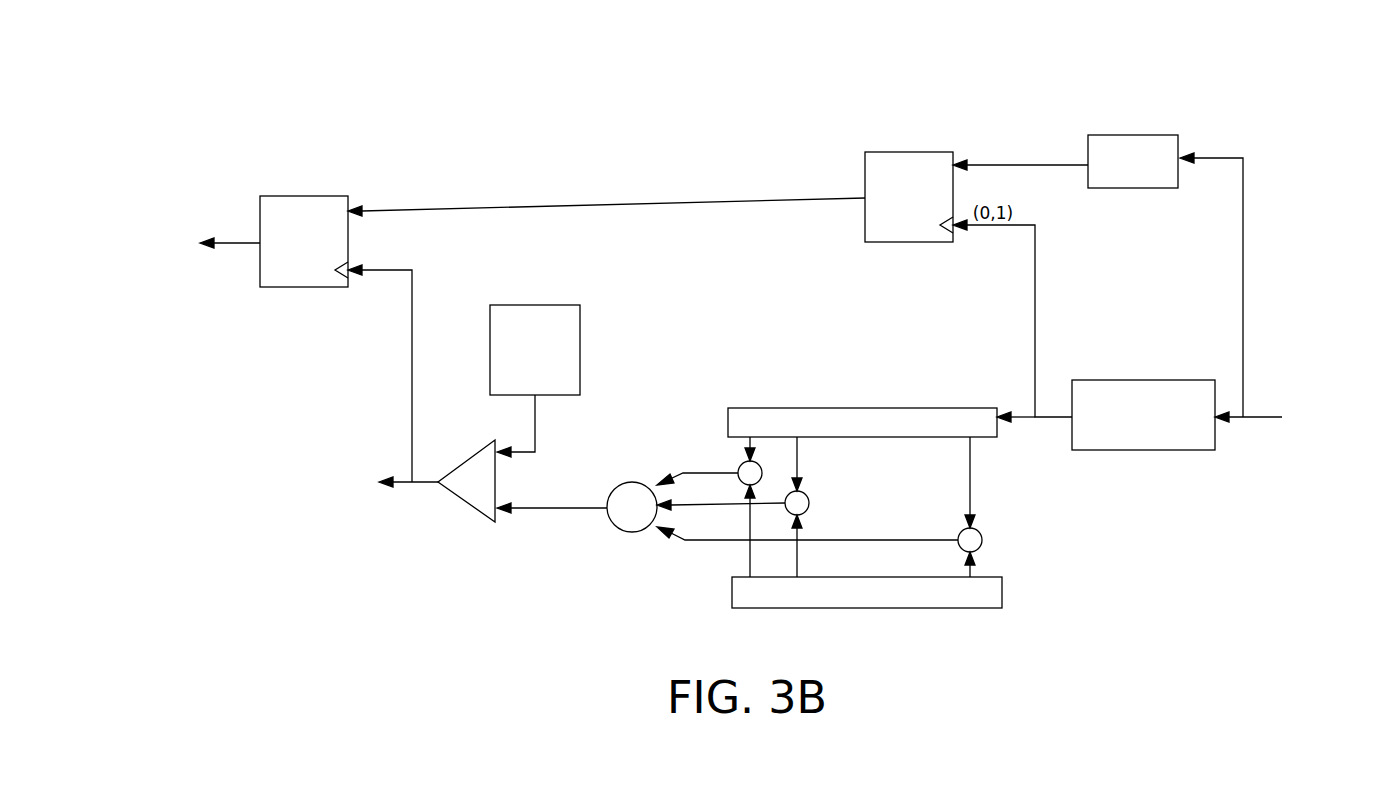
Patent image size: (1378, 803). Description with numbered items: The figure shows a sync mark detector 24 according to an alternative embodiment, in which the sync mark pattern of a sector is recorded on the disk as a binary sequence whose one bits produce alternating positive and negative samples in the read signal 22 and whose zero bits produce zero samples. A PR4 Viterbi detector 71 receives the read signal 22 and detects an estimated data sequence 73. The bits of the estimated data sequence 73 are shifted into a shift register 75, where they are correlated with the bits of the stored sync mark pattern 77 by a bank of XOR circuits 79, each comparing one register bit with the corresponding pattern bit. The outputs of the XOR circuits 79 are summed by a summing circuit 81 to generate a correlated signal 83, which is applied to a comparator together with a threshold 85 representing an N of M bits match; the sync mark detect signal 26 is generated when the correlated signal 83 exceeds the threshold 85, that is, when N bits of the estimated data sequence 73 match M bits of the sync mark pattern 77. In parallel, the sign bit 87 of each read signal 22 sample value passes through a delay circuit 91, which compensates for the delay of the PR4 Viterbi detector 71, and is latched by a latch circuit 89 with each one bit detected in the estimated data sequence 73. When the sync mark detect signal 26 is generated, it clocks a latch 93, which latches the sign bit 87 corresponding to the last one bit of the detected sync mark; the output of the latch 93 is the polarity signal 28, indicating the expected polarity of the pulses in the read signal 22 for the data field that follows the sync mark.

The sync mark detector 24 is at (190, 118).
The latch 93 is at (300, 196).
The polarity signal 28 is at (233, 248).
The latch circuit 89 is at (903, 152).
The delay circuit 91 is at (1130, 132).
The sign bit (MSB) 87 is at (1245, 221).
The PR4 Viterbi detector 71 is at (1145, 452).
The read signal 22 is at (1260, 420).
The estimated data sequence 73 is at (1035, 421).
The shift register 75 is at (728, 421).
The sync mark pattern 77 is at (732, 593).
The XOR circuits 79 is at (958, 530).
The summing circuit 81 is at (635, 478).
The correlated signal 83 is at (586, 512).
The threshold 85 is at (490, 349).
The sync mark detect signal 26 is at (405, 487).